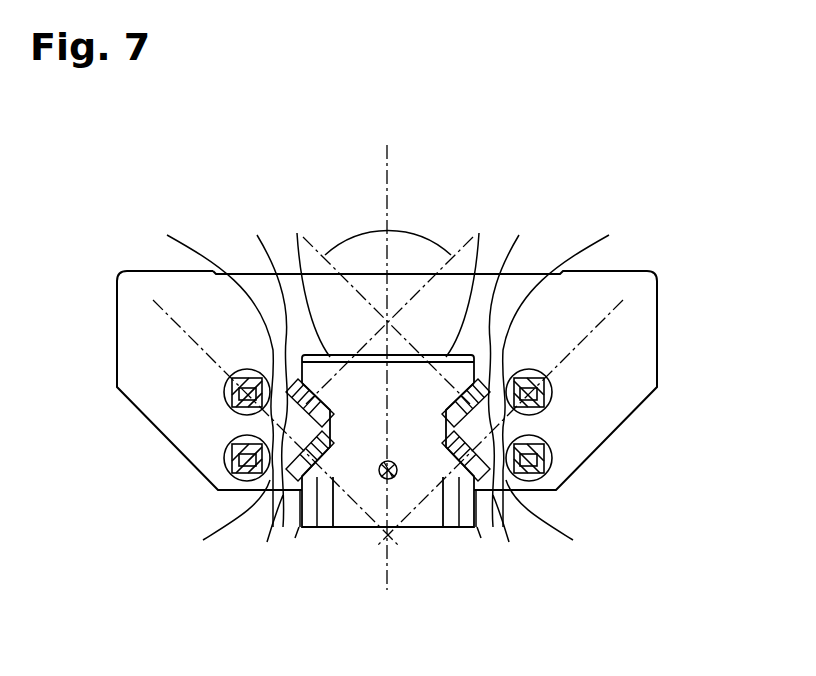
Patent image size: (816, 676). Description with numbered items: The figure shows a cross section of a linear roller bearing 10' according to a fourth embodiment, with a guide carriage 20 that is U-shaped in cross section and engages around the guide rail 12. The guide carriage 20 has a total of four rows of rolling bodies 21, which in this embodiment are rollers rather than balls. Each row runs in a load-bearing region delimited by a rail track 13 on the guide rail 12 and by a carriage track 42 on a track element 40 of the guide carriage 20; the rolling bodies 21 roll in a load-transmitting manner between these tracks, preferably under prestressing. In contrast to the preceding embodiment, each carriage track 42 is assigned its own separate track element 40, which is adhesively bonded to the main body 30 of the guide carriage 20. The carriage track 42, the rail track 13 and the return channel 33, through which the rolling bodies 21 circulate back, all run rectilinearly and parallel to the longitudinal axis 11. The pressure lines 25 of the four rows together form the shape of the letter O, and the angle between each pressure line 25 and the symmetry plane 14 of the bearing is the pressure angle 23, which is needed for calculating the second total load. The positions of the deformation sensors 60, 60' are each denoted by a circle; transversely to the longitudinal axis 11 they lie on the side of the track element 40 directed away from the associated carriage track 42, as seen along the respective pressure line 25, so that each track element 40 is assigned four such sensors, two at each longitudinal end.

The linear roller bearing 10' is at (696, 123).
The longitudinal axis 11 is at (388, 498).
The guide rail 12 is at (368, 556).
The rail track 13 is at (464, 402).
The symmetry plane 14 is at (388, 152).
The guide carriage 20 is at (439, 380).
The main body 30 is at (640, 323).
The rolling bodies 21 is at (388, 388).
The pressure angle 23 is at (418, 241).
The pressure lines 25 is at (453, 250).
The return channel 33 is at (224, 392).
The track element 40 is at (387, 388).
The carriage track 42 is at (398, 531).
The deformation sensor 60 is at (388, 388).
The deformation sensor 60' is at (388, 388).